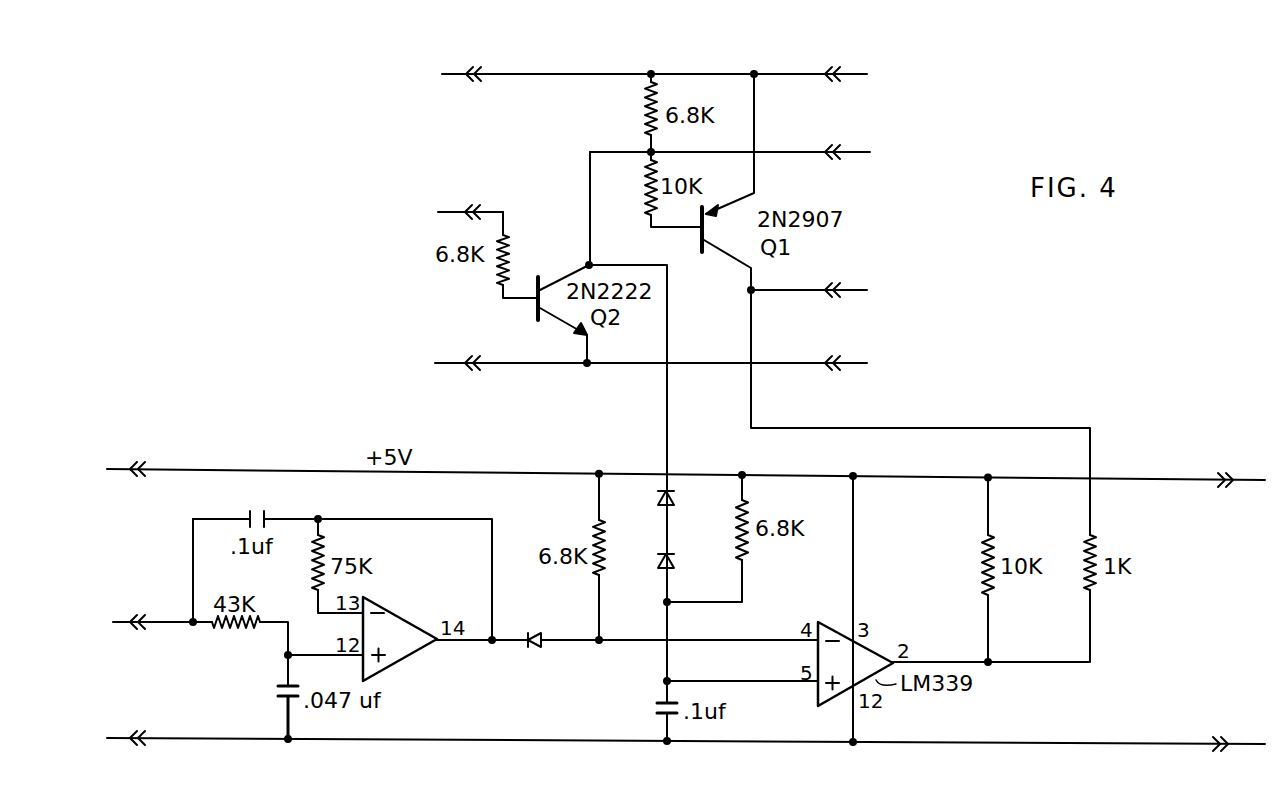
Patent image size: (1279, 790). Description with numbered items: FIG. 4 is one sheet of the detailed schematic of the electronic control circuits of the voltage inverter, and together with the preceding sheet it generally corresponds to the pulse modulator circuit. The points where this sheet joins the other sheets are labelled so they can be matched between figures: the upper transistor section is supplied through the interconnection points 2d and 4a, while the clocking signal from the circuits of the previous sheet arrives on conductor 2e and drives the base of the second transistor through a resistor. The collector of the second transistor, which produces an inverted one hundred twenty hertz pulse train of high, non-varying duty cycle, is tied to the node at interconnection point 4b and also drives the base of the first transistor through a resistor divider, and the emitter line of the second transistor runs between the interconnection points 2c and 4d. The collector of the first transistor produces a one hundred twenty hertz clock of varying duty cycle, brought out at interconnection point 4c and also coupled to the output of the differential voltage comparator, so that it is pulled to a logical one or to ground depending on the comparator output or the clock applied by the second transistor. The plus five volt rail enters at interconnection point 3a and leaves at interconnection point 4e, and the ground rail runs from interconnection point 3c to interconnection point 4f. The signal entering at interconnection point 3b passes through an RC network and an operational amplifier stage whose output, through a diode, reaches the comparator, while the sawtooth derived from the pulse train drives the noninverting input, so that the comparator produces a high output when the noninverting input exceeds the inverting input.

The interconnection point 2c is at (434, 362).
The interconnection point 2d is at (448, 73).
The conductor 2e is at (432, 211).
The interconnection point 3a is at (118, 467).
The interconnection point 3b is at (118, 620).
The interconnection point 3c is at (118, 737).
The interconnection point 4a is at (857, 73).
The interconnection point 4b is at (857, 151).
The interconnection point 4c is at (859, 289).
The interconnection point 4d is at (859, 362).
The interconnection point 4e is at (1243, 478).
The interconnection point 4f is at (1240, 743).